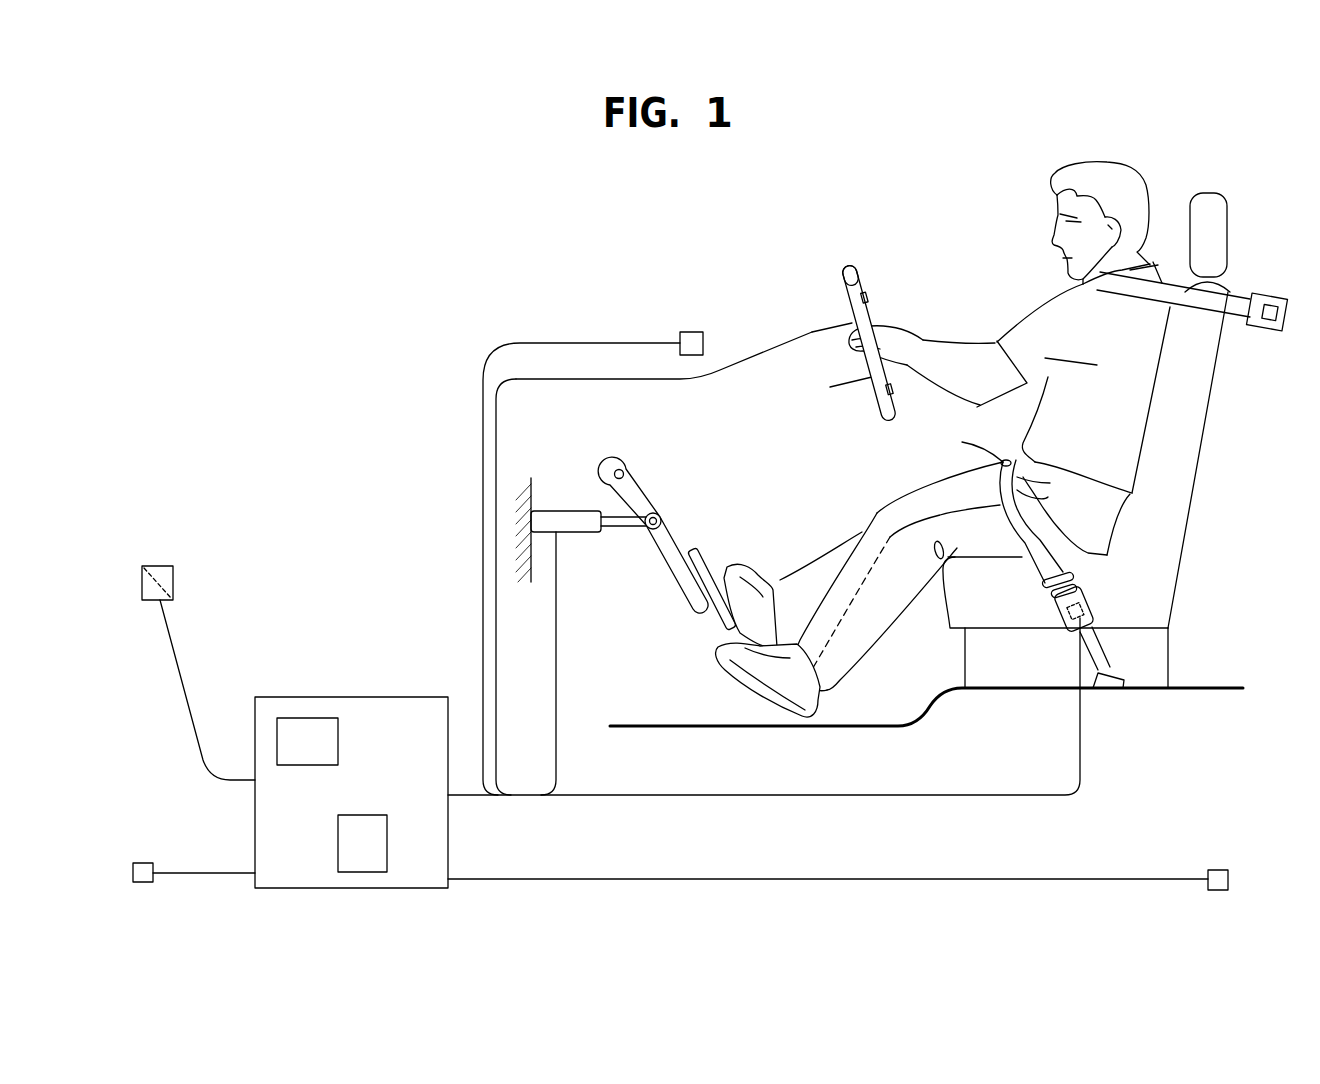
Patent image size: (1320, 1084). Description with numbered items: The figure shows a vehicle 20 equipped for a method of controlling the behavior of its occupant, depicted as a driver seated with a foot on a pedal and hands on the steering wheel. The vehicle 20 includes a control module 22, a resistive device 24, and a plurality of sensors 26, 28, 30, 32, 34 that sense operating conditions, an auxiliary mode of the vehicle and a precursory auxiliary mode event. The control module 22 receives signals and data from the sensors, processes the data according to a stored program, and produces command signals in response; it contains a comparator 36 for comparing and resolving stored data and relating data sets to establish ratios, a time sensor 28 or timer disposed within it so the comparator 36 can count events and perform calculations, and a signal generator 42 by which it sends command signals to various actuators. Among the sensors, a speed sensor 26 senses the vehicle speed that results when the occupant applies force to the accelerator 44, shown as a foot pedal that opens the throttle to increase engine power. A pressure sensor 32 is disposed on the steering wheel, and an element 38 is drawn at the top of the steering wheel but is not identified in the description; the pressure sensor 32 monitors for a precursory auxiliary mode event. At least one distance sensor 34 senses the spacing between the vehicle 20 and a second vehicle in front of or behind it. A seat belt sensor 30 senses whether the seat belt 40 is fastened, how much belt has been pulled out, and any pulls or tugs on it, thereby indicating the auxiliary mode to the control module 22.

The vehicle 20 is at (386, 284).
The control module 22 is at (369, 750).
The resistive device 24 is at (573, 513).
The speed sensor 26 is at (325, 717).
The time sensor 28 is at (387, 848).
The seat belt sensor 30 is at (1274, 306).
The pressure sensor 32 is at (862, 297).
The distance sensor 34 is at (142, 863).
The comparator 36 is at (162, 566).
The steering sensor 38 is at (838, 263).
The seat belt 40 is at (1000, 465).
The signal generator 42 is at (690, 332).
The accelerator 44 is at (672, 542).